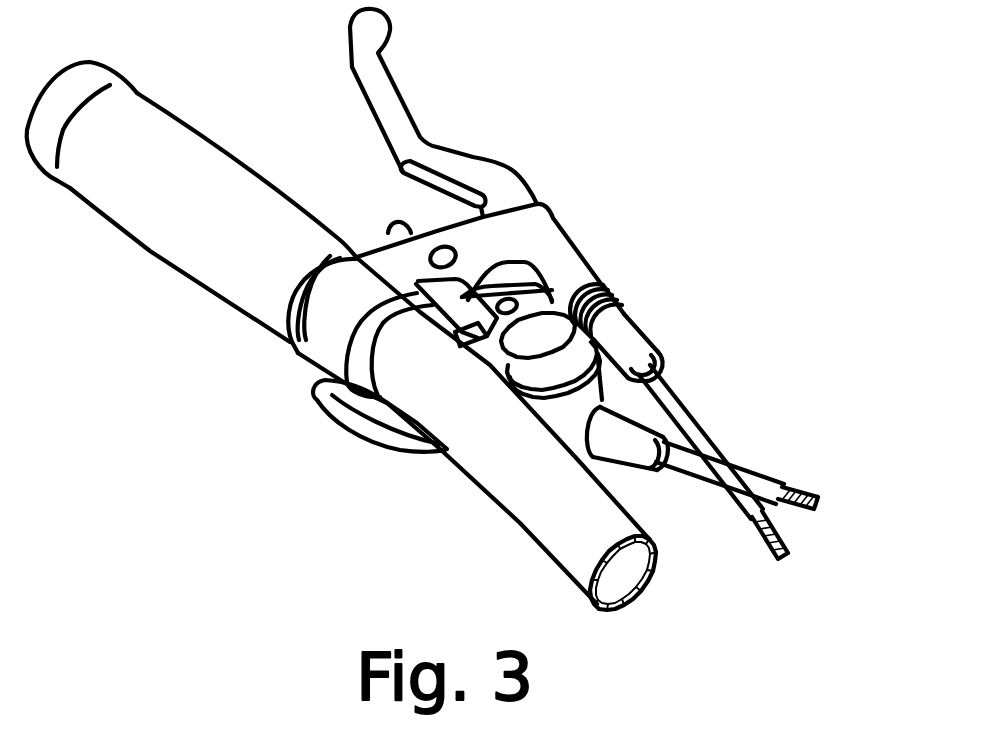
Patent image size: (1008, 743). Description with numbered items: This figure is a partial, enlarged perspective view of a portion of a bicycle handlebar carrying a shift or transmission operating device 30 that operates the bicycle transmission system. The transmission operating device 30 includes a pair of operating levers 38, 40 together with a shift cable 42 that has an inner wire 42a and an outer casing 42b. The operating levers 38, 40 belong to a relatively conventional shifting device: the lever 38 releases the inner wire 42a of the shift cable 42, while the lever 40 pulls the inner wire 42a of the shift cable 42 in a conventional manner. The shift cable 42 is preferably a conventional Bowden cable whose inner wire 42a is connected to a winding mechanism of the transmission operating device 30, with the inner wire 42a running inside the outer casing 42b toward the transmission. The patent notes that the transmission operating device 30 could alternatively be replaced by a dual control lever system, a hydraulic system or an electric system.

The transmission operating device 30 is at (603, 397).
The operating lever 38 is at (393, 222).
The operating lever 40 is at (343, 437).
The shift cable 42 is at (769, 442).
The inner wire 42a is at (773, 453).
The outer casing 42b is at (750, 462).